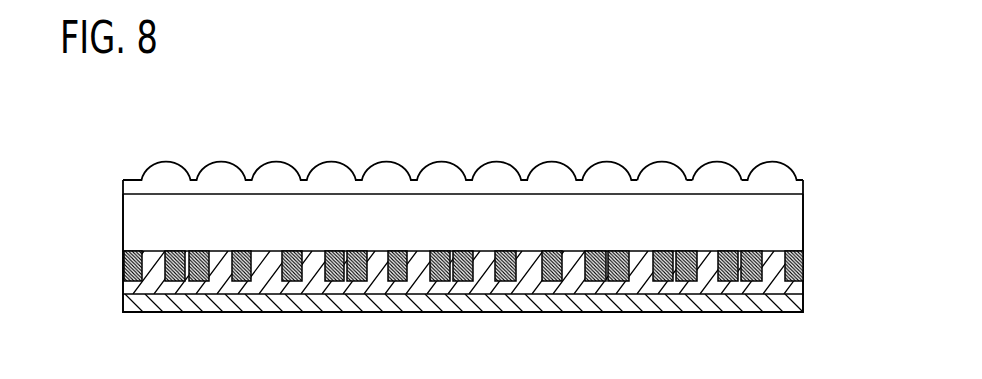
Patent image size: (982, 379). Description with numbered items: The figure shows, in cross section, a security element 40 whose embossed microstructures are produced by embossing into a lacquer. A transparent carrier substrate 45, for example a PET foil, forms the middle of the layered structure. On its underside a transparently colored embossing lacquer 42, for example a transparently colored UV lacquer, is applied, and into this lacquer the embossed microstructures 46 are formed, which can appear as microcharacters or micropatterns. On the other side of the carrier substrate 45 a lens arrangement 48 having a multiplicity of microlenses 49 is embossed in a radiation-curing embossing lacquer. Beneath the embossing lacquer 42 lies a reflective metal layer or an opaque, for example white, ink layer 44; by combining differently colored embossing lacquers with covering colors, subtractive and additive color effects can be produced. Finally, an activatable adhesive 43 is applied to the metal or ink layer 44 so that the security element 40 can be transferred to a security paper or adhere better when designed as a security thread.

The security element 40 is at (129, 132).
The transparently colored embossing lacquer 42 is at (132, 281).
The activatable adhesive 43 is at (130, 302).
The reflective metal layer or opaque ink layer 44 is at (793, 291).
The transparent carrier substrate 45 is at (804, 223).
The embossed microstructures 46 is at (792, 274).
The lens arrangement 48 is at (805, 186).
The microlenses 49 is at (720, 162).